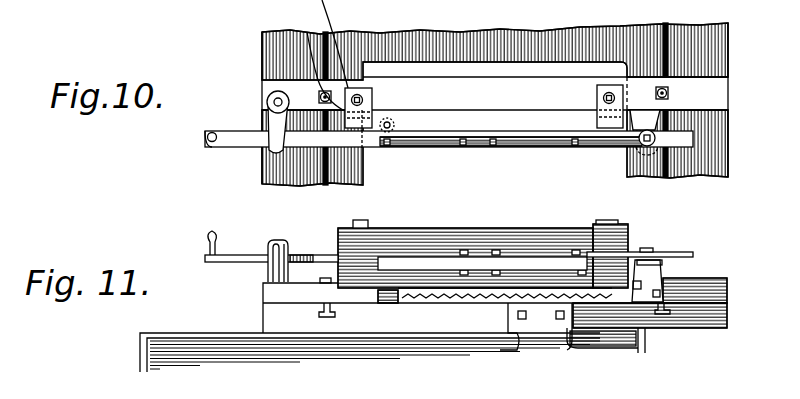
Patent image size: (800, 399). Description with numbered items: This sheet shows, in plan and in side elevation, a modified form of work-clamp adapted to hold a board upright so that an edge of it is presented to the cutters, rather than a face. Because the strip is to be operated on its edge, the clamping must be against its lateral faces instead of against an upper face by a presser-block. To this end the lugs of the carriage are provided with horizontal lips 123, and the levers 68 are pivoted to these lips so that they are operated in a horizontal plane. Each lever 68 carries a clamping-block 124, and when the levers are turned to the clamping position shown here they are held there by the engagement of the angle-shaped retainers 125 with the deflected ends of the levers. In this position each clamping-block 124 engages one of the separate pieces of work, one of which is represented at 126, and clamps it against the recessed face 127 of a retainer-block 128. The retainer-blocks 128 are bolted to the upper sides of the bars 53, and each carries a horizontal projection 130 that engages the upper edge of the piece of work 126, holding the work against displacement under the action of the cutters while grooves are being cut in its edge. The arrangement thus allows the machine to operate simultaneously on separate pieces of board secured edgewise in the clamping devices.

In FIG. 11, the bars 53 is at (457, 290).
In FIG. 10, the levers 68 is at (483, 144).
In FIG. 11, the levers 68 is at (525, 253).
In FIG. 10, the horizontal lips 123 is at (642, 152).
In FIG. 11, the horizontal lips 123 is at (685, 262).
In FIG. 11, the clamping-block 124 is at (418, 262).
In FIG. 10, the angle-shaped retainers 125 is at (268, 152).
In FIG. 11, the angle-shaped retainers 125 is at (267, 265).
In FIG. 10, the piece of work 126 is at (442, 127).
In FIG. 11, the piece of work 126 is at (382, 240).
In FIG. 11, the recessed faces 127 is at (338, 236).
In FIG. 10, the retainer-blocks 128 is at (360, 88).
In FIG. 10, the horizontal projections 130 is at (309, 59).
In FIG. 11, the horizontal projections 130 is at (340, 228).